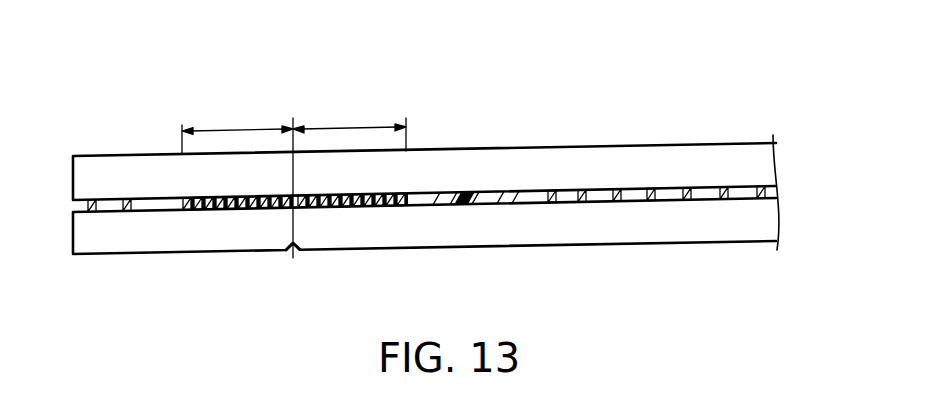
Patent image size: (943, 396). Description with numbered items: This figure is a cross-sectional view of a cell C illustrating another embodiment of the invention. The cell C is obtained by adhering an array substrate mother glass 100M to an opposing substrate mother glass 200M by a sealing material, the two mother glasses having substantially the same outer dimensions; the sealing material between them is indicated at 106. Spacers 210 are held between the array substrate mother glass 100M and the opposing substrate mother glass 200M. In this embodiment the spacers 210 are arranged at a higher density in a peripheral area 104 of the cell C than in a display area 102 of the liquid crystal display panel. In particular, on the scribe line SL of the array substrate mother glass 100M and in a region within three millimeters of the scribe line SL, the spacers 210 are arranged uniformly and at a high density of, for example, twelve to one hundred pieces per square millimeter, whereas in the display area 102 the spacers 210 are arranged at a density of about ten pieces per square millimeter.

The cell C is at (693, 110).
The opposing substrate mother glass 200M is at (766, 163).
The array substrate mother glass 100M is at (766, 223).
The spacers 210 is at (548, 192).
The sealant 106 is at (458, 192).
The display area 102 is at (621, 174).
The peripheral area 104 is at (303, 120).
The scribe line SL is at (299, 256).